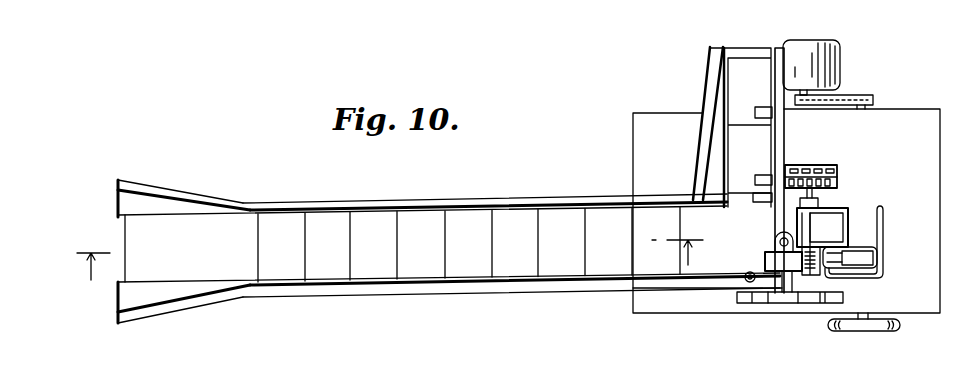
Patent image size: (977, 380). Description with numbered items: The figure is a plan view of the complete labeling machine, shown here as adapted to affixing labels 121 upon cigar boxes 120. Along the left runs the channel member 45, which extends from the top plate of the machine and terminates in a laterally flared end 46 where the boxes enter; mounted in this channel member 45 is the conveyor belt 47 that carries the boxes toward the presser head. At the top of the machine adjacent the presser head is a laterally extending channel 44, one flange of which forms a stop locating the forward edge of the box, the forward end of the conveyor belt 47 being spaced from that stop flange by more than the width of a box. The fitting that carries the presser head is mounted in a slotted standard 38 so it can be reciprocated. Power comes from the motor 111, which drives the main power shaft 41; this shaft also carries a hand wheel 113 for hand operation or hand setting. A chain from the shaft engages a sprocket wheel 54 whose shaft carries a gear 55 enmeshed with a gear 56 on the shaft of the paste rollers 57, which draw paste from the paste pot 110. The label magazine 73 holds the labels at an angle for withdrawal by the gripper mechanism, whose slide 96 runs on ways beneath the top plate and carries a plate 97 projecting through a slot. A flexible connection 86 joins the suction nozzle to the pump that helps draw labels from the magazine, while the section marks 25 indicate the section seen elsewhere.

The conveyor trough 25 is at (390, 248).
The slotted standard 38 is at (777, 230).
The main power shaft 41 is at (877, 106).
The laterally extending channel 44 is at (785, 135).
The channel member 45 is at (403, 200).
The laterally flared end 46 is at (148, 199).
The conveyor belt 47 is at (206, 228).
The sprocket wheel 54 is at (837, 168).
The gear 55 is at (838, 180).
The gear 56 is at (844, 165).
The paste rollers 57 is at (811, 252).
The label magazine 73 is at (875, 256).
The flexible connection 86 is at (860, 282).
The slide 96 is at (760, 303).
The plate 97 is at (786, 303).
The paste pot 110 is at (834, 213).
The motor 111 is at (810, 43).
The hand wheel 113 is at (892, 331).
The cigar boxes 120 is at (547, 216).
The labels 121 is at (761, 107).